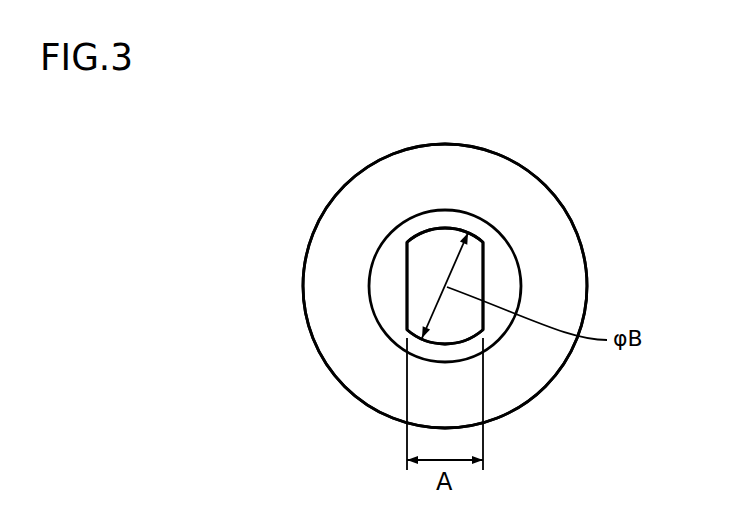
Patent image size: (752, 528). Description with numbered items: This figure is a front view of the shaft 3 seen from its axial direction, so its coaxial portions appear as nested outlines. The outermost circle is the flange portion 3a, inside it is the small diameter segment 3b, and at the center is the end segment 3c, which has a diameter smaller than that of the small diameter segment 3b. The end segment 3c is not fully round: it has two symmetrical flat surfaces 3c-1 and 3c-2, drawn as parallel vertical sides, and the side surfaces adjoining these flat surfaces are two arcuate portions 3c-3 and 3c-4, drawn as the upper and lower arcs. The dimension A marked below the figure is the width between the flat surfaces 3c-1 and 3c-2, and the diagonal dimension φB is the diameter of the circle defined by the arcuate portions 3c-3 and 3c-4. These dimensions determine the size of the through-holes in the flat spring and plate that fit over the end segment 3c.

The shaft 3 is at (300, 257).
The flange portion 3a is at (557, 375).
The small diameter segment 3b is at (375, 320).
The end segment 3c is at (402, 253).
The flat surface 3c-1 is at (485, 257).
The flat surface 3c-2 is at (407, 285).
The arcuate portion 3c-3 is at (453, 343).
The arcuate portion 3c-4 is at (445, 227).